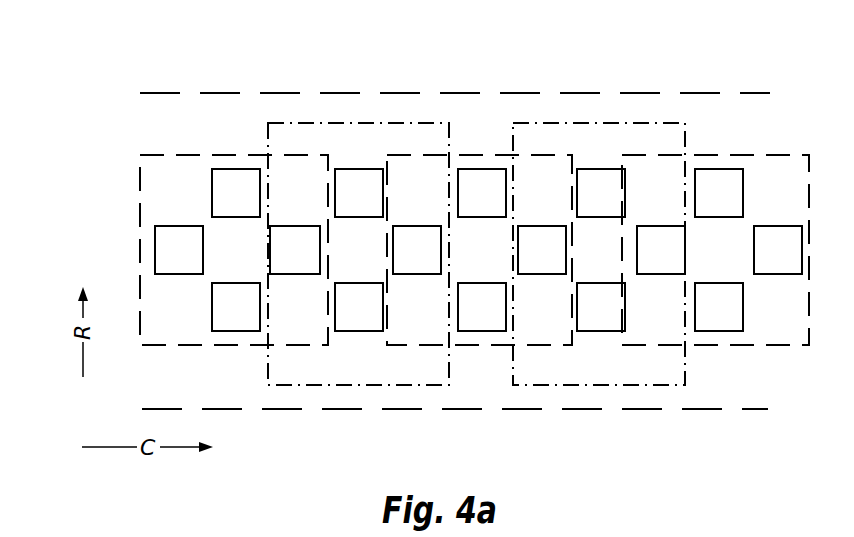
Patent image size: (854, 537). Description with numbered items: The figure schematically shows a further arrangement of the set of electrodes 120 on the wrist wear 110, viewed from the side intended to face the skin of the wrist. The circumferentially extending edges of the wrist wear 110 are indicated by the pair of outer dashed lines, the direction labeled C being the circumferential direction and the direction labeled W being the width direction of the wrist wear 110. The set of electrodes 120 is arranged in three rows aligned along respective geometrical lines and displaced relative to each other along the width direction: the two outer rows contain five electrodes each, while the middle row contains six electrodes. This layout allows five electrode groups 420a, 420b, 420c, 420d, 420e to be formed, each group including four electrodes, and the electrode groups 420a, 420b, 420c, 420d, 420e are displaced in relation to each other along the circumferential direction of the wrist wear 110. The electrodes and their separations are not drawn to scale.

The wrist wear 110 is at (688, 412).
The set of electrodes 120 is at (106, 126).
The first electrode group 420a is at (240, 150).
The second electrode group 420b is at (350, 125).
The third electrode group 420c is at (477, 153).
The fourth electrode group 420d is at (585, 125).
The fifth electrode group 420e is at (742, 155).